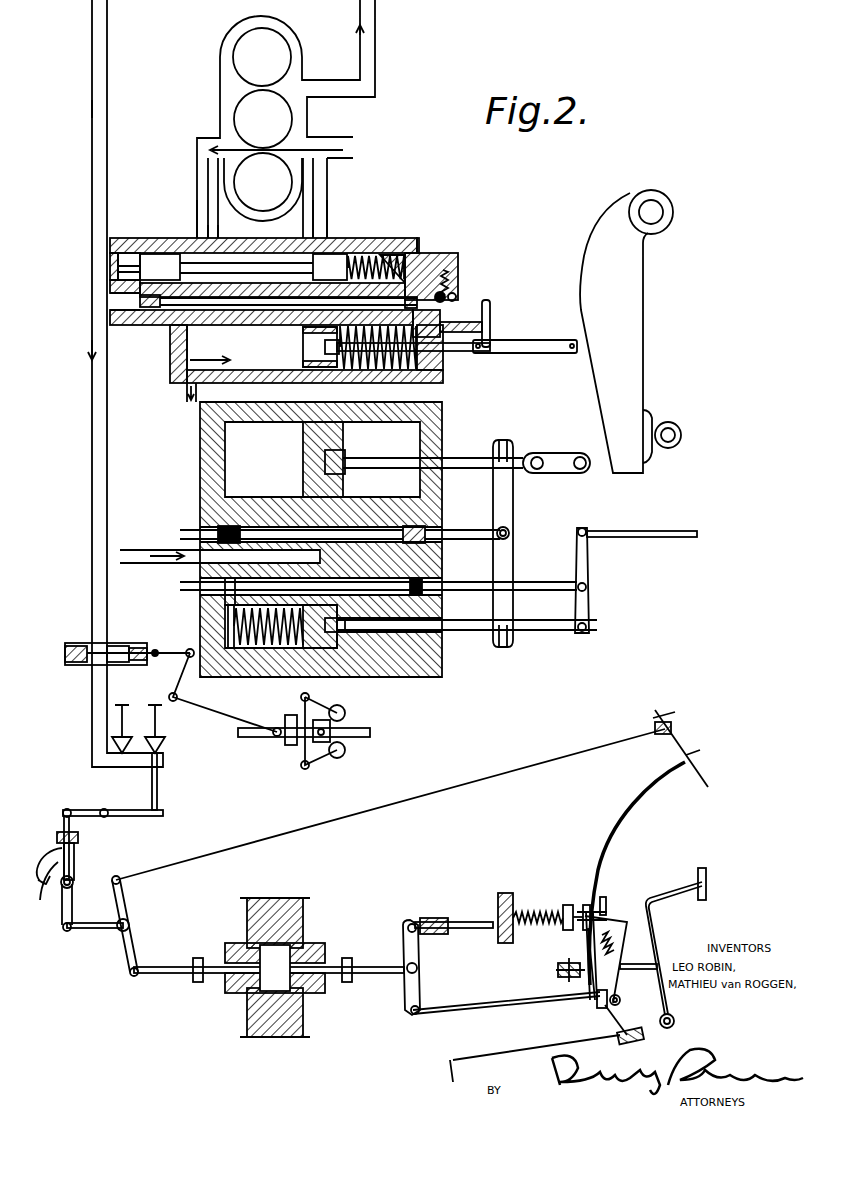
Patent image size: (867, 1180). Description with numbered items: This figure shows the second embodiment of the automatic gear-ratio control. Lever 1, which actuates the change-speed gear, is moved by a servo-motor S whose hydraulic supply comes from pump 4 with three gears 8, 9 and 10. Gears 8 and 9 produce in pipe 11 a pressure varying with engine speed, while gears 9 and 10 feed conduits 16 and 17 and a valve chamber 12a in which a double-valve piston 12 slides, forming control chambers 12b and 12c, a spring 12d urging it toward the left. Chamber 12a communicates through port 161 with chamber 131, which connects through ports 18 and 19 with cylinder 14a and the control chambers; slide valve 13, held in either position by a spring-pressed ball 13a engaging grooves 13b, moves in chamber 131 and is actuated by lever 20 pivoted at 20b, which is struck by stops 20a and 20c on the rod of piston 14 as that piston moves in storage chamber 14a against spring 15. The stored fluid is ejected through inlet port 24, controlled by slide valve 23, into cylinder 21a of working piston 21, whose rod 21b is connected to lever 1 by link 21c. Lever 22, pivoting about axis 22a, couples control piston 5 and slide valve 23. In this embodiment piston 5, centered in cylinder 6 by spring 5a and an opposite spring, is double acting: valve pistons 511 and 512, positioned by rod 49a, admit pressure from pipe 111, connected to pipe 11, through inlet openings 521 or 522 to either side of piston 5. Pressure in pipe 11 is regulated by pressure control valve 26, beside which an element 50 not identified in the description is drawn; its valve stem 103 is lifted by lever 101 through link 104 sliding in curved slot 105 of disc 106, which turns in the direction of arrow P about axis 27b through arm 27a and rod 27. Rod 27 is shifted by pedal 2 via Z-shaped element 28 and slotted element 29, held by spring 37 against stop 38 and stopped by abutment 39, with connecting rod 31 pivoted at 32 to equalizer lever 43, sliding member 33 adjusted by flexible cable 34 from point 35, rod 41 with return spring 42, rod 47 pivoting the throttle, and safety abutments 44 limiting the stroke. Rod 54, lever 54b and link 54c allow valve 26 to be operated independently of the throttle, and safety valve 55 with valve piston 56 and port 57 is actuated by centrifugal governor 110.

The lever 1 is at (636, 270).
The throttle pedal 2 is at (672, 895).
The pump 4 is at (300, 50).
The control piston 5 is at (355, 650).
The spring 5a is at (240, 650).
The cylinder 6 is at (256, 650).
The gear 8 is at (233, 52).
The gear 9 is at (234, 117).
The gear 10 is at (233, 173).
The pipe 11 is at (107, 100).
The double-valve piston 12 is at (158, 254).
The valve chamber 12a is at (303, 240).
The control chamber 12b is at (128, 240).
The control chamber 12c is at (425, 250).
The spring 12d is at (388, 240).
The slide valve 13 is at (420, 290).
The spring-pressed ball 13a is at (452, 294).
The grooves 13b is at (460, 297).
The chamber 131 is at (275, 337).
The piston 14 is at (312, 338).
The cylinder 14a is at (212, 368).
The spring 15 is at (440, 376).
The conduit 16 is at (198, 194).
The port 161 is at (222, 240).
The conduit 17 is at (322, 196).
The port 18 is at (122, 316).
The port 19 is at (445, 258).
The lever 20 is at (492, 340).
The stop 20a is at (478, 350).
The pivot axis 20b is at (490, 324).
The stop 20c is at (571, 356).
The working piston 21 is at (340, 446).
The cylinder 21a is at (238, 440).
The piston rod 21b is at (472, 456).
The link 21c is at (556, 454).
The lever 22 is at (512, 494).
The axis 22a is at (512, 530).
The slide valve 23 is at (428, 528).
The inlet port 24 is at (225, 530).
The pressure control valve 26 is at (160, 742).
The rod 27 is at (292, 978).
The arm 27a is at (70, 915).
The axis 27b is at (73, 880).
The Z-shaped element 28 is at (616, 920).
The slotted element 29 is at (628, 968).
The connecting rod 31 is at (495, 1012).
The pivot axis 32 is at (413, 1015).
The sliding member 33 is at (600, 1006).
The flexible cable 34 is at (626, 790).
The instrument board point 35 is at (693, 760).
The spring 37 is at (596, 910).
The stop 38 is at (630, 1035).
The abutment 39 is at (556, 972).
The rod 41 is at (470, 925).
The return spring 42 is at (566, 905).
The equalizer lever 43 is at (420, 976).
The safety abutments 44 is at (199, 984).
The rod 47 is at (560, 1055).
The rod 49a is at (602, 534).
The valve 50 is at (120, 755).
The valve piston 511 is at (225, 582).
The valve piston 512 is at (445, 585).
The inlet opening 521 is at (225, 597).
The inlet opening 522 is at (445, 606).
The rod 54 is at (585, 748).
The lever 54b is at (126, 950).
The link 54c is at (80, 930).
The safety valve 55 is at (80, 645).
The valve piston 56 is at (137, 646).
The port 57 is at (168, 696).
The lever 101 is at (140, 816).
The valve stem 103 is at (158, 800).
The link 104 is at (67, 809).
The curved slot 105 is at (43, 886).
The disc 106 is at (78, 862).
The centrifugal governor 110 is at (332, 735).
The pipe 111 is at (156, 546).
The arrow P is at (44, 856).
The servo-motor S is at (440, 410).